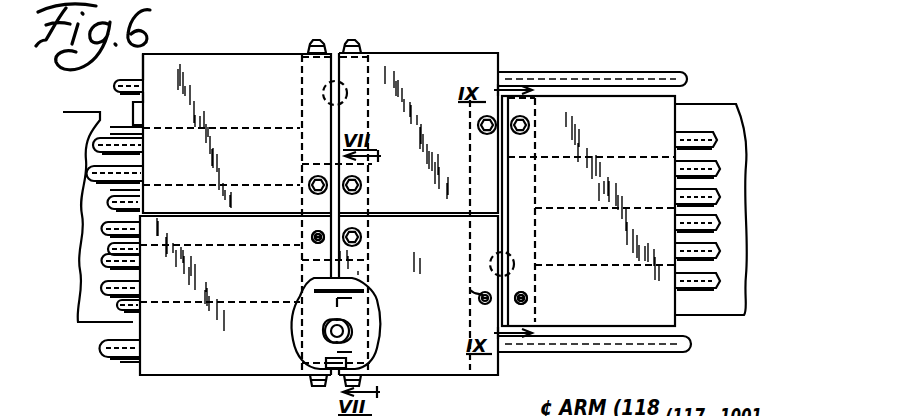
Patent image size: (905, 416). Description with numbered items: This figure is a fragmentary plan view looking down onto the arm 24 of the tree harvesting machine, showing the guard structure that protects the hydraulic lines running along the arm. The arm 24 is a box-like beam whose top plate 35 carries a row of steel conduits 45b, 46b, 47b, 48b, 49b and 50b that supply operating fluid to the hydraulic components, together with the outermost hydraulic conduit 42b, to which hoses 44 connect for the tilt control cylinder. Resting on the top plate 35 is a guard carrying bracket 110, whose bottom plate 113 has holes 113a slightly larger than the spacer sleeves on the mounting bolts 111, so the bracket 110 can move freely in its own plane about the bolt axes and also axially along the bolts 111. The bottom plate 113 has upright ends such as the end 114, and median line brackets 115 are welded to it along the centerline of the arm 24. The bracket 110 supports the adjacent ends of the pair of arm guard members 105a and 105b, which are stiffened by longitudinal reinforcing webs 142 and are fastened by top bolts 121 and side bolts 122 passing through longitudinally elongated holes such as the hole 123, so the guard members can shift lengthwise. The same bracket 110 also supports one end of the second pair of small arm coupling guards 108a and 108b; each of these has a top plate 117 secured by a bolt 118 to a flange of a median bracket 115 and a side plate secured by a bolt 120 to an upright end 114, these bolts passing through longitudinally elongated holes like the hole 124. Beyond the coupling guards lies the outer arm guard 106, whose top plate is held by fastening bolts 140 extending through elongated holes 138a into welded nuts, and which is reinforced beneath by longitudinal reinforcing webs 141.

The arm guard member 105b is at (275, 30).
The arm guard member 105a is at (200, 376).
The small arm coupling guard 108b is at (428, 53).
The small arm coupling guard 108a is at (390, 376).
The mounting bolt 111 is at (342, 306).
The side bolt 122 is at (320, 40).
The bolt 120 is at (356, 40).
The top bolt 121 is at (310, 182).
The longitudinally elongated hole 123 is at (302, 246).
The median line bracket 115 is at (360, 210).
The bolt 118 is at (478, 126).
The fastening bolt 140 is at (528, 120).
The elongated hole 138a is at (528, 299).
The longitudinally elongated hole 124 is at (470, 296).
The guard carrying bracket 110 is at (284, 354).
The bottom plate 113 is at (312, 326).
The hole 113a is at (350, 334).
The upright end 114 is at (332, 384).
The top plate 117 is at (484, 53).
The hose 44 is at (676, 30).
The top plate 35 is at (710, 104).
The longitudinal reinforcing web 141 is at (705, 150).
The outer arm guard 106 is at (668, 326).
The longitudinal reinforcing web 142 is at (130, 102).
The outermost hydraulic conduit 42b is at (140, 78).
The conduit 50b is at (98, 146).
The conduit 49b is at (92, 174).
The conduit 48b is at (112, 202).
The conduit 47b is at (106, 228).
The conduit 46b is at (106, 260).
The conduit 45b is at (106, 288).
The arm 24 is at (118, 312).